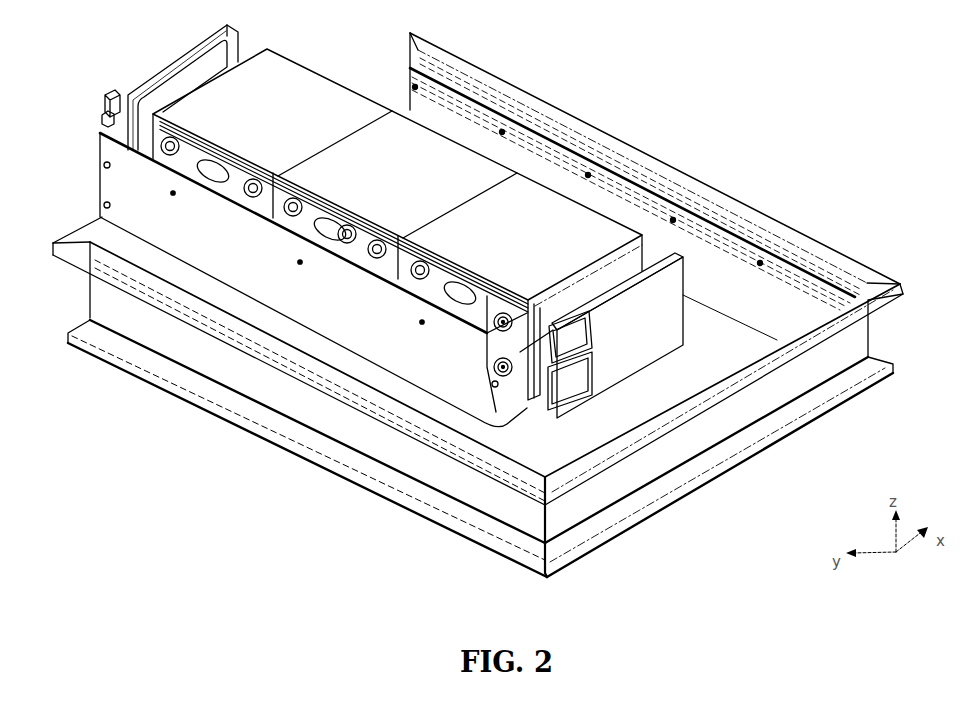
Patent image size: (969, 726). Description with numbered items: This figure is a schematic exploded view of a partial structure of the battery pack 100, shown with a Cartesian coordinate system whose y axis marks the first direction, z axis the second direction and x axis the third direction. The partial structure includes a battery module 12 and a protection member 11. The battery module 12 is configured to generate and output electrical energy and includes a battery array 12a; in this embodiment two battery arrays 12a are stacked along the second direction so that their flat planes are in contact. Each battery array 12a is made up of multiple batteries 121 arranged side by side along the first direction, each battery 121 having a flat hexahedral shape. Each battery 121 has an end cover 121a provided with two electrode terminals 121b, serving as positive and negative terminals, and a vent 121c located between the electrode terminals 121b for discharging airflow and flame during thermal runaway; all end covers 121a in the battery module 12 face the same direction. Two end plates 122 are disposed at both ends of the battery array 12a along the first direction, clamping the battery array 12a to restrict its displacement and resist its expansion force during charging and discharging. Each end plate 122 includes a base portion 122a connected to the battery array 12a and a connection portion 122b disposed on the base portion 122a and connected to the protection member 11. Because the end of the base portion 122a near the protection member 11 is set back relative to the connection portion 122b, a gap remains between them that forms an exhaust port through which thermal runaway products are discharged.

The battery pack 100 is at (581, 94).
The protection member 11 is at (230, 260).
The battery module 12 is at (160, 62).
The battery array 12a is at (297, 58).
The battery 121 is at (623, 170).
The end cover 121a is at (520, 387).
The electrode terminal 121b is at (553, 400).
The vent 121c is at (423, 323).
The end plate 122 is at (642, 355).
The base portion 122a is at (670, 307).
The connection portion 122b is at (598, 396).